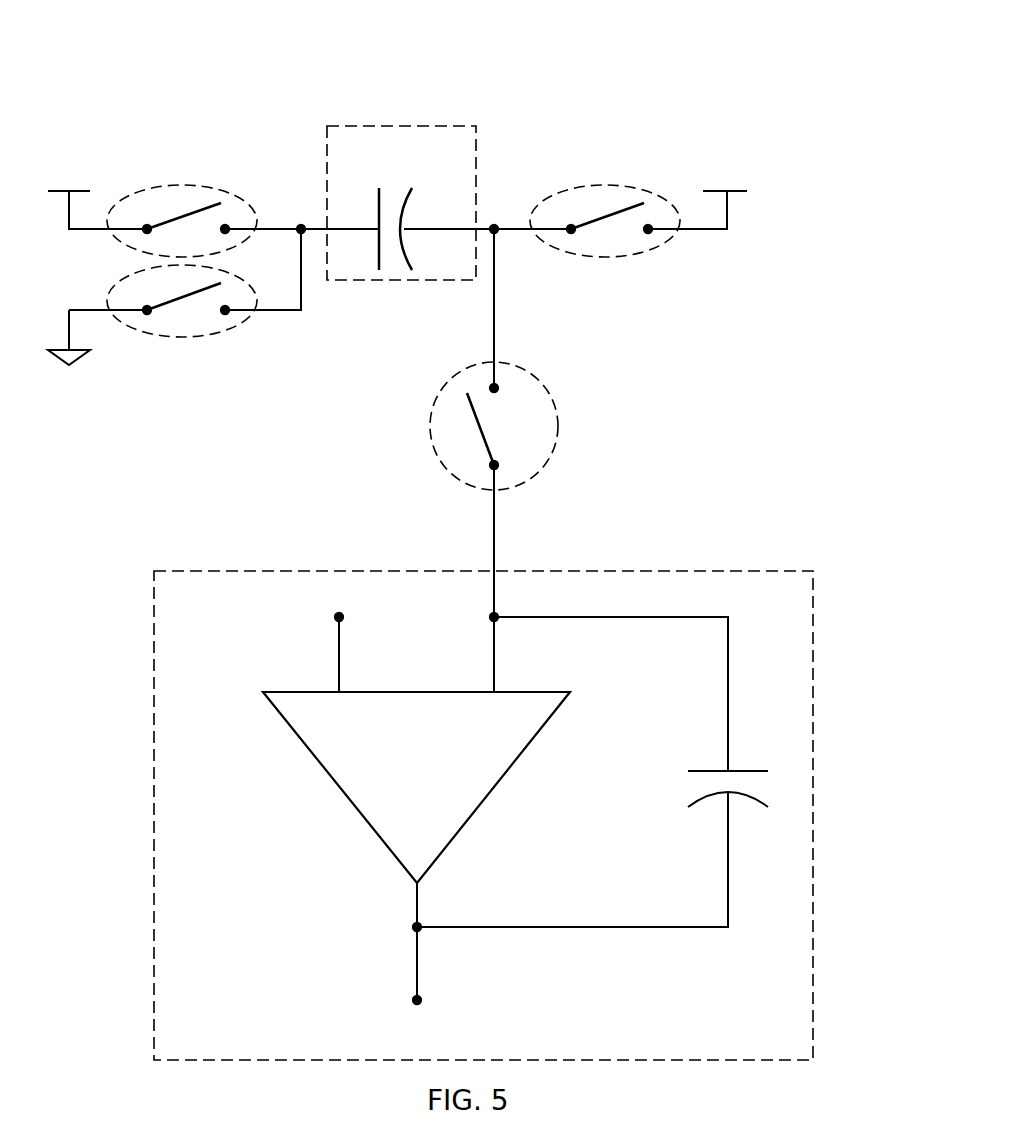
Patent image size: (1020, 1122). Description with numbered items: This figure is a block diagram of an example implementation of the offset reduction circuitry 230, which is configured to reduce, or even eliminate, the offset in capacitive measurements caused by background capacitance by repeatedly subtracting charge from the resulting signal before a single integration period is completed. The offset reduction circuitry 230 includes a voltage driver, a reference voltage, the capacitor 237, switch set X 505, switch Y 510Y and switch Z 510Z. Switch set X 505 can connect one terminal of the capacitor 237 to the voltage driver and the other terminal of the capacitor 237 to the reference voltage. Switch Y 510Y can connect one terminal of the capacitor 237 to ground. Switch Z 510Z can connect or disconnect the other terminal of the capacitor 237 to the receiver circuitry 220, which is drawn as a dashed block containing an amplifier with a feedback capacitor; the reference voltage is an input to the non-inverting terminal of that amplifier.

The switch set X 505 is at (625, 143).
The switch Y 510Y is at (177, 338).
The switch Z 510Z is at (552, 399).
The capacitor 237 is at (383, 178).
The offset reduction circuitry 230 is at (767, 535).
The receiver circuitry 220 is at (234, 1001).